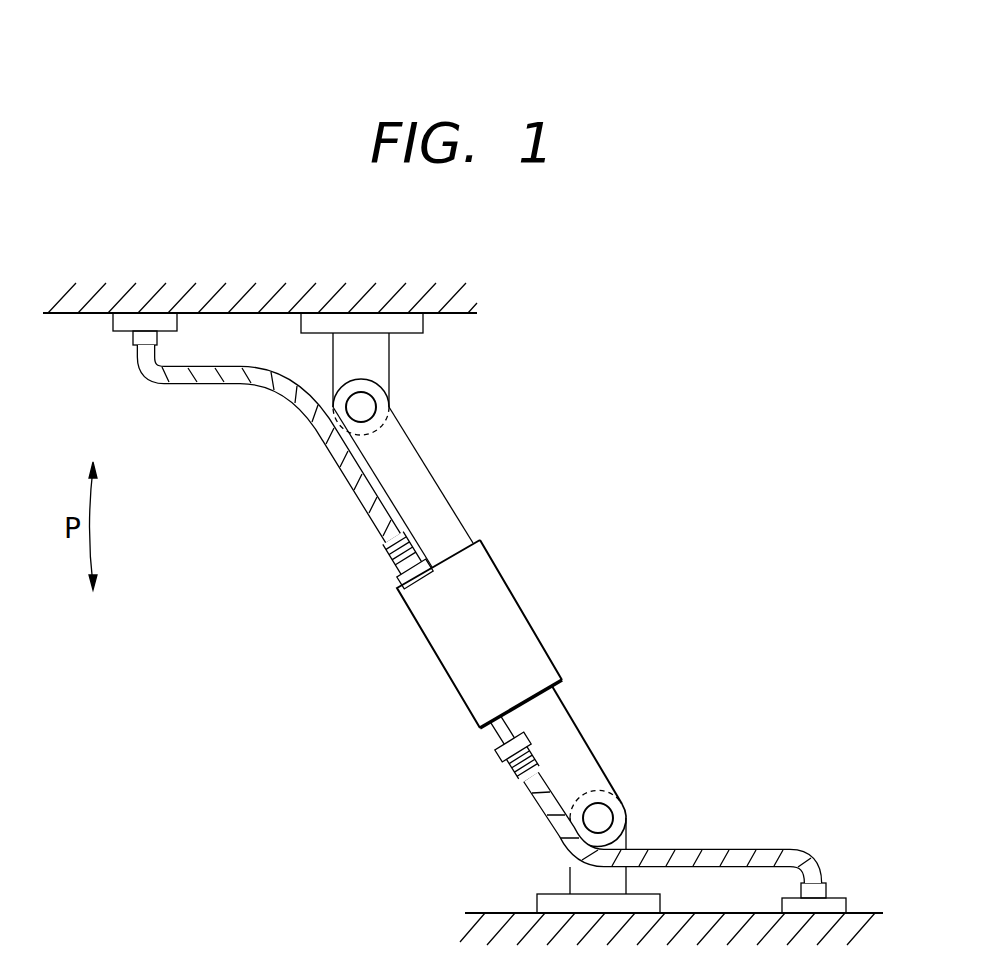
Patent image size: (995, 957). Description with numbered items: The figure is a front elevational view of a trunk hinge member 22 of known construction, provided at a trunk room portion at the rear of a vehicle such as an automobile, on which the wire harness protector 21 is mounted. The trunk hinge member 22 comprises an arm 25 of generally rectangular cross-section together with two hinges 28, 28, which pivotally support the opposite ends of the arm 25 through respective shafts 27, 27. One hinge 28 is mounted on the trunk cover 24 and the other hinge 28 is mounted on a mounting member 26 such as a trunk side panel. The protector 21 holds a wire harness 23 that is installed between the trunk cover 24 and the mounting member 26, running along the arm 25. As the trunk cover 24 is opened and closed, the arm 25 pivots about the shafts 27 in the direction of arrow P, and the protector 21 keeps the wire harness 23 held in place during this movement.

The wire harness protector 21 is at (543, 618).
The trunk hinge member 22 is at (530, 612).
The wire harness 23 is at (327, 432).
The trunk cover 24 is at (441, 304).
The arm 25 is at (442, 510).
The mounting member 26 is at (857, 918).
The shaft 27 is at (371, 411).
The hinge 28 is at (383, 358).